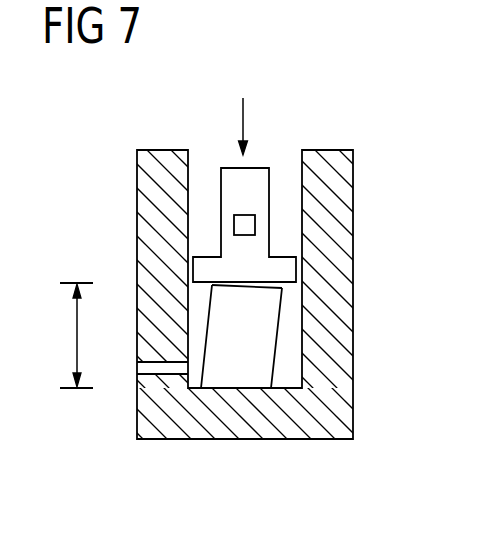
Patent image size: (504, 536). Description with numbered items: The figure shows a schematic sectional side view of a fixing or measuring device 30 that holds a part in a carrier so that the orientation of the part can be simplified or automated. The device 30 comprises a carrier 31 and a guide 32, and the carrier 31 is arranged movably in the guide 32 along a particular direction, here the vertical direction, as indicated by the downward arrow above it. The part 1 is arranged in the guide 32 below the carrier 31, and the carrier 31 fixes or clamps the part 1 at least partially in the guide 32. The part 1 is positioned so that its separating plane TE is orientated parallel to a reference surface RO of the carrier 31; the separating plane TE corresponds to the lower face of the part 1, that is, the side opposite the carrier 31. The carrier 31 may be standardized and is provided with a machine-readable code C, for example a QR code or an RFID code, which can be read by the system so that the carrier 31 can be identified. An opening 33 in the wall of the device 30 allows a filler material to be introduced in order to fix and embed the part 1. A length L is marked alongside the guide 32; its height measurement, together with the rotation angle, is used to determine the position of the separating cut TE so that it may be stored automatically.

The fixing device 30 is at (316, 97).
The carrier 31 is at (254, 178).
The guide 32 is at (203, 420).
The opening 33 is at (146, 367).
The part 1 is at (240, 357).
The machine-readable code C is at (241, 227).
The reference surface RO is at (287, 284).
The separating plane TE is at (260, 393).
The length L is at (73, 335).